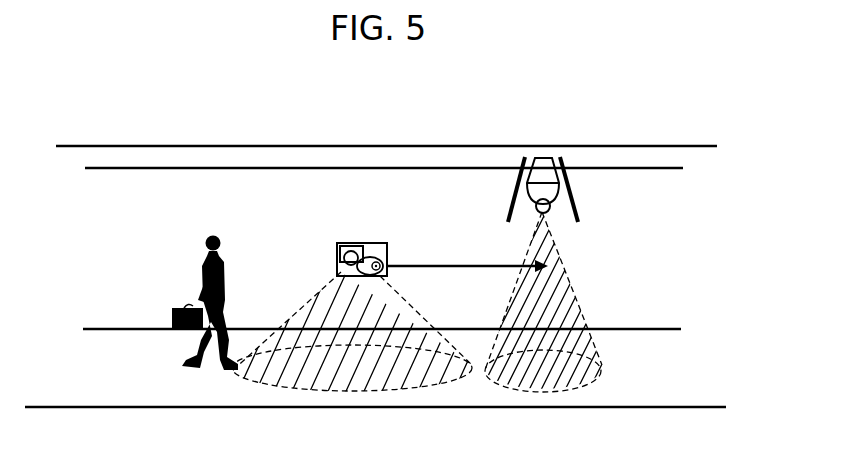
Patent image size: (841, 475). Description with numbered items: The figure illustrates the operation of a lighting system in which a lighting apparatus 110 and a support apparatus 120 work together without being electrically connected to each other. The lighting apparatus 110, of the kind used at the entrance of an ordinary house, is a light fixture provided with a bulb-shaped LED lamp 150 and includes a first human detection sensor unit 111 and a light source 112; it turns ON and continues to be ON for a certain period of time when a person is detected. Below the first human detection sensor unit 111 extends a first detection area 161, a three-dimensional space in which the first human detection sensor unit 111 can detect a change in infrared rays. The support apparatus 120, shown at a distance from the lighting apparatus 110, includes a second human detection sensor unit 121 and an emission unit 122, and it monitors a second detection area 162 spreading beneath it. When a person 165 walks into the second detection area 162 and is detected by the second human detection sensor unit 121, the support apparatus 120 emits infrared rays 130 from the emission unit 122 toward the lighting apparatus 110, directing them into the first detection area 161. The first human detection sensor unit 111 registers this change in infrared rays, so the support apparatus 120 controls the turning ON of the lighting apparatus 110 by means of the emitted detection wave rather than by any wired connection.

The lighting apparatus 110 is at (578, 191).
The first human detection sensor unit 111 is at (560, 199).
The light source 112 is at (543, 173).
The bulb-shaped LED lamp 150 is at (492, 152).
The support apparatus 120 is at (372, 238).
The second human detection sensor unit 121 is at (341, 258).
The emission unit 122 is at (378, 262).
The infrared rays 130 is at (453, 269).
The first detection area 161 is at (563, 307).
The second detection area 162 is at (302, 372).
The person 165 is at (201, 272).